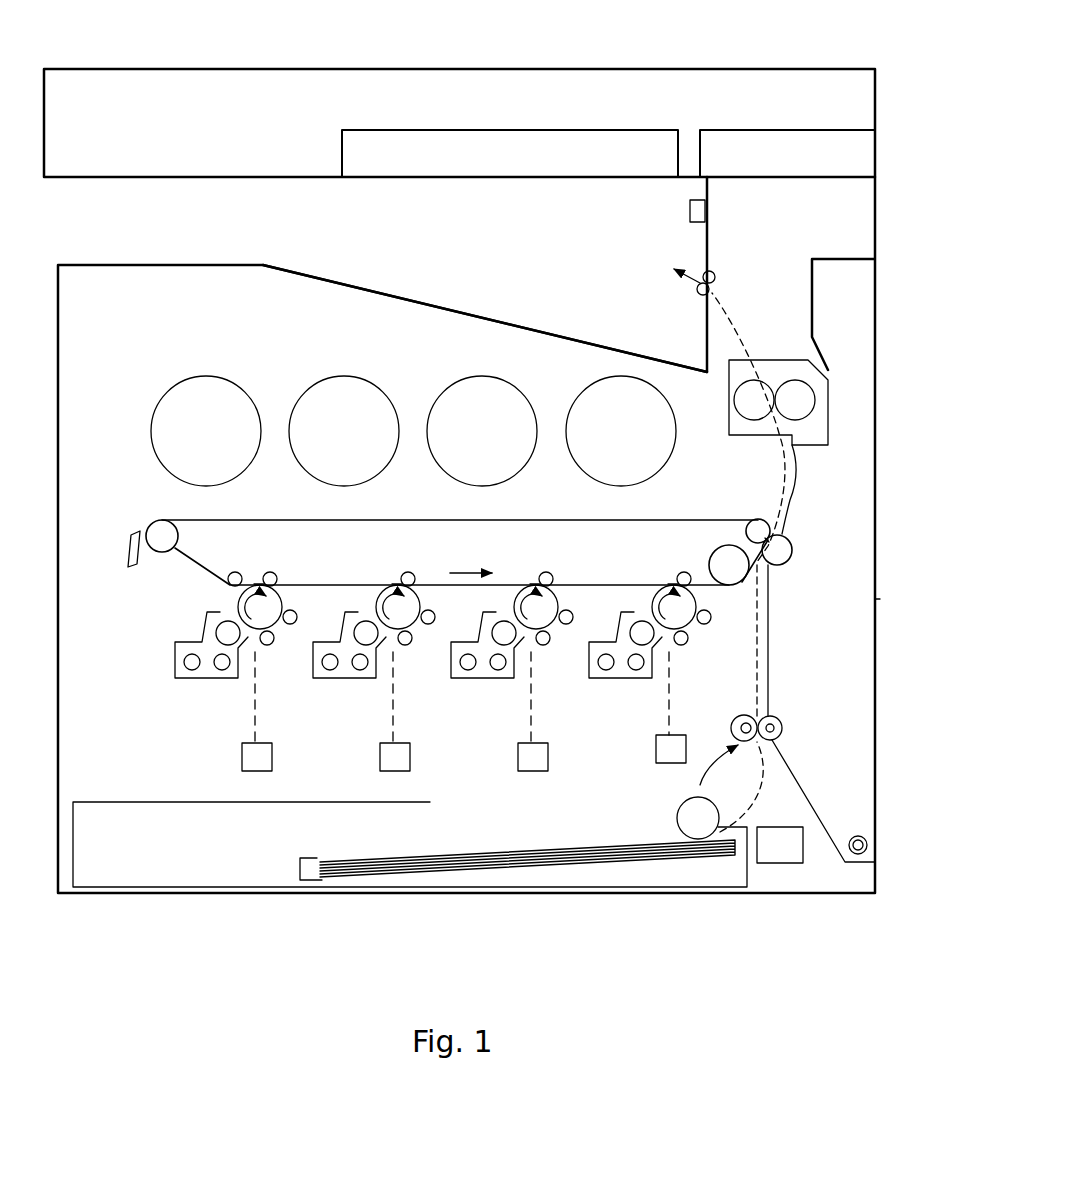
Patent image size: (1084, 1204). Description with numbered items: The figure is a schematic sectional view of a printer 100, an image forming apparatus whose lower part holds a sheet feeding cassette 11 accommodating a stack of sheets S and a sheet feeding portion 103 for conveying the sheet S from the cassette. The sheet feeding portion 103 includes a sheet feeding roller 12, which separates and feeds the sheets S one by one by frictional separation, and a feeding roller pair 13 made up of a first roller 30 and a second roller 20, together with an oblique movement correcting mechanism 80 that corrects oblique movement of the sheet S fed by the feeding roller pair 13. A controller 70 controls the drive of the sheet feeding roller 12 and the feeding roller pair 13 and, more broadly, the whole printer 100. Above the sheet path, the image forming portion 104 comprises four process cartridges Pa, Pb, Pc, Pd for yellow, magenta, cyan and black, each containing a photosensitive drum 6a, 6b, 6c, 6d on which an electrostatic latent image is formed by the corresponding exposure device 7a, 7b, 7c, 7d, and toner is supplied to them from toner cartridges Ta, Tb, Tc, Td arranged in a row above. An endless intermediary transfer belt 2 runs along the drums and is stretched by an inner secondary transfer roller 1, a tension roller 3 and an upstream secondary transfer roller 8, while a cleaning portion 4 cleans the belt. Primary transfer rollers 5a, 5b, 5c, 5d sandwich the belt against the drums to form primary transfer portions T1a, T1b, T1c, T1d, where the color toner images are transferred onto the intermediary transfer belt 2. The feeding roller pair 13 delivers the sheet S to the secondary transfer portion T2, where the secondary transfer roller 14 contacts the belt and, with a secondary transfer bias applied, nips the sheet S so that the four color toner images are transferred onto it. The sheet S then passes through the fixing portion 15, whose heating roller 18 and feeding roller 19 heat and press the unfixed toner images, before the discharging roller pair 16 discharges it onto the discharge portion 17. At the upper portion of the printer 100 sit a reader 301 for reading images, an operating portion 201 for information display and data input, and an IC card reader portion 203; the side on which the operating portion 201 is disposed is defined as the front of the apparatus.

The printer 100 is at (928, 220).
The reader 301 is at (222, 68).
The operating portion 201 is at (490, 128).
The IC card reader portion 203 is at (728, 127).
The discharge portion 17 is at (518, 318).
The discharging roller pair 16 is at (716, 271).
The fixing portion 15 is at (805, 442).
The heating roller 18 is at (754, 420).
The feeding roller 19 is at (791, 380).
The intermediary transfer belt 2 is at (395, 519).
The tension roller 3 is at (154, 523).
The cleaning portion 4 is at (135, 566).
The inner secondary transfer roller 1 is at (750, 522).
The upstream secondary transfer roller 8 is at (745, 578).
The secondary transfer roller 14 is at (792, 550).
The secondary transfer portion T2 is at (786, 532).
The image forming portion 104 is at (825, 578).
The oblique movement correcting mechanism 80 is at (794, 737).
The sheet feeding portion 103 is at (826, 777).
The first roller 30 is at (743, 715).
The second roller 20 is at (775, 716).
The feeding roller pair 13 is at (699, 774).
The sheet feeding roller 12 is at (677, 817).
The controller 70 is at (780, 827).
The sheet S is at (520, 851).
The sheet feeding cassette 11 is at (300, 868).
The toner cartridge Ta is at (207, 377).
The toner cartridge Tb is at (345, 377).
The toner cartridge Tc is at (483, 377).
The toner cartridge Td is at (670, 394).
The process cartridge Pa is at (215, 678).
The process cartridge Pb is at (353, 678).
The process cartridge Pc is at (491, 678).
The process cartridge Pd is at (629, 678).
The primary transfer roller 5a is at (276, 572).
The primary transfer roller 5b is at (414, 572).
The primary transfer roller 5c is at (552, 572).
The primary transfer roller 5d is at (690, 572).
The photosensitive drum 6a is at (297, 613).
The photosensitive drum 6b is at (435, 613).
The photosensitive drum 6c is at (573, 613).
The photosensitive drum 6d is at (711, 613).
The primary transfer portion T1a is at (260, 584).
The primary transfer portion T1b is at (398, 584).
The primary transfer portion T1c is at (536, 584).
The primary transfer portion T1d is at (674, 584).
The exposure device 7a is at (238, 757).
The exposure device 7b is at (376, 757).
The exposure device 7c is at (514, 757).
The exposure device 7d is at (634, 749).